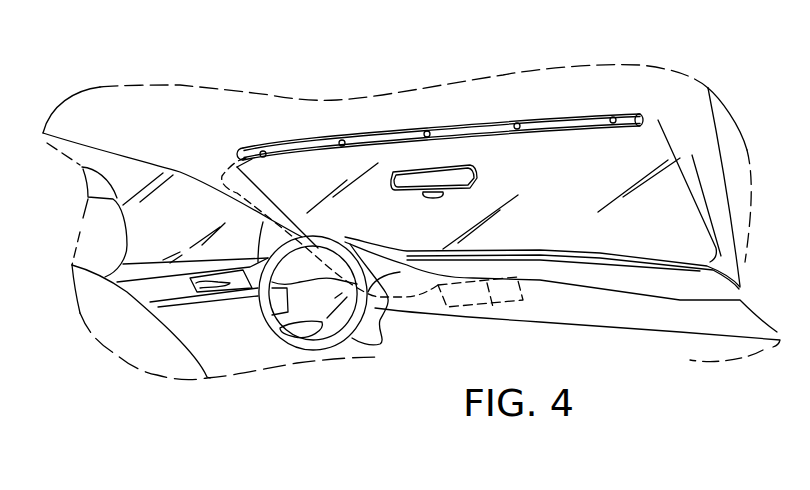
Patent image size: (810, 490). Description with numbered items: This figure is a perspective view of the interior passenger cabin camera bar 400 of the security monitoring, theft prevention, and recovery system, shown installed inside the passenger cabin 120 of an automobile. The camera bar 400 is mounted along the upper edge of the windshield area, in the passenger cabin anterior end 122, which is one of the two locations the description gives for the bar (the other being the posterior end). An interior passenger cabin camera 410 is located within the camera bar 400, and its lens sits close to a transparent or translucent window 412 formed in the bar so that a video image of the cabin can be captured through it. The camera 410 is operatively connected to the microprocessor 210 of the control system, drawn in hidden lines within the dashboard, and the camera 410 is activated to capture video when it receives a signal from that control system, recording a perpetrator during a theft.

The passenger cabin 120 is at (210, 330).
The passenger cabin anterior end 122 is at (637, 287).
The microprocessor 210 is at (460, 307).
The interior passenger cabin camera bar 400 is at (430, 95).
The interior passenger cabin camera 410 is at (614, 115).
The interior passenger cabin camera bar transparent or translucent window 412 is at (330, 145).